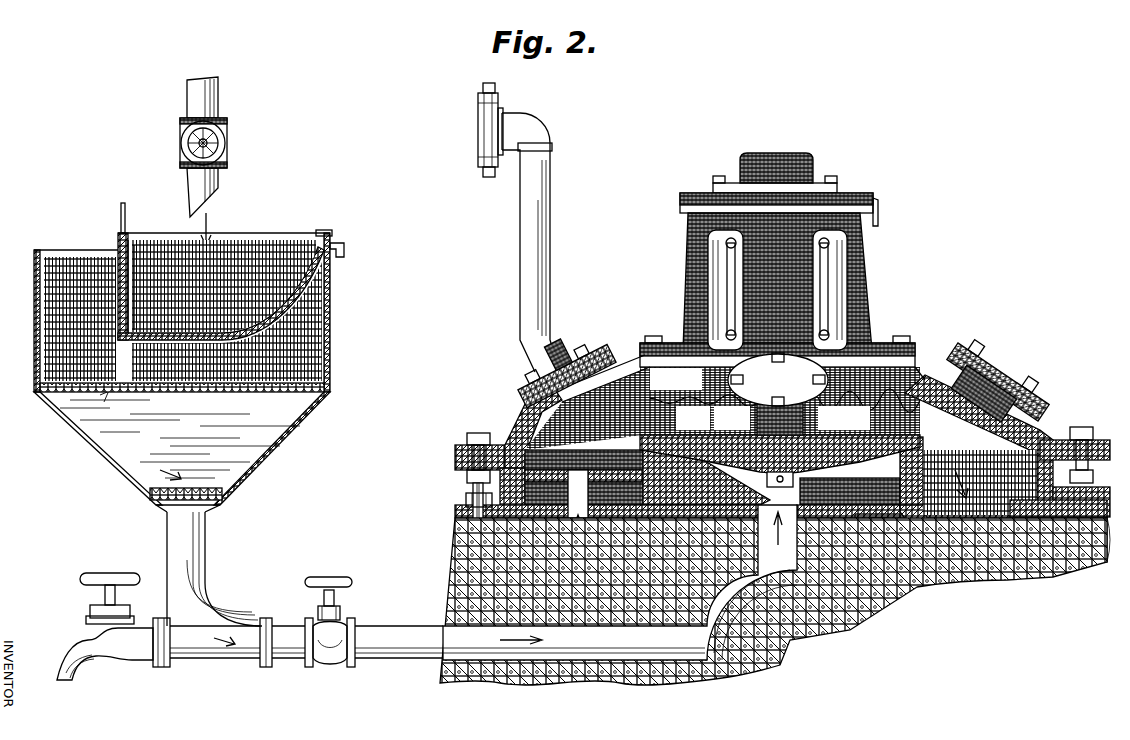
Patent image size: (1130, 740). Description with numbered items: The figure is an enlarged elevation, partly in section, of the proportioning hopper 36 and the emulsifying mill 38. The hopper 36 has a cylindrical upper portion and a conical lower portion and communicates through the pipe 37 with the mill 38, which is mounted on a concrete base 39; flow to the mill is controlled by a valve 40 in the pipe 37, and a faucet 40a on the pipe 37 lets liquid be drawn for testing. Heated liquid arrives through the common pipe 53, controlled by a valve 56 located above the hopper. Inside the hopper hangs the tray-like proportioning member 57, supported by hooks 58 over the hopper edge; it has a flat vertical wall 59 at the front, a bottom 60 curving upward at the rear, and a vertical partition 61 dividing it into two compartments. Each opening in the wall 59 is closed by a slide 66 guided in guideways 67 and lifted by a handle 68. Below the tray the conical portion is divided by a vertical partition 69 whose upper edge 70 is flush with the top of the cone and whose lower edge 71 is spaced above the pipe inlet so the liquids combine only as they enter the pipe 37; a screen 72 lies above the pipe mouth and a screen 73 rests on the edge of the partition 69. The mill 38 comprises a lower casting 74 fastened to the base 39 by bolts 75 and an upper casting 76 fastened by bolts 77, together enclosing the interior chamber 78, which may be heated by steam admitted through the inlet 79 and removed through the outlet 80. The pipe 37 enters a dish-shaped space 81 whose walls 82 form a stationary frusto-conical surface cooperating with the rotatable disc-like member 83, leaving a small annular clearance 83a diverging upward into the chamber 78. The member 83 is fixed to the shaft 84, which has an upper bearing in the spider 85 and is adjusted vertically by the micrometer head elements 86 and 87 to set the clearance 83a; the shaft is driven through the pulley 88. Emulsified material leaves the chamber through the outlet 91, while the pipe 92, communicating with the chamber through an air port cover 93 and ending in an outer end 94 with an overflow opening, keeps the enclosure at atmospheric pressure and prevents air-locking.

The proportioning hopper 36 is at (330, 300).
The pipe 37 is at (207, 585).
The emulsifying mill 38 is at (936, 373).
The concrete base 39 is at (856, 612).
The valve 40 is at (333, 656).
The faucet 40a is at (61, 648).
The common pipe 53 is at (214, 103).
The valve 56 is at (229, 144).
The proportioning member 57 is at (323, 232).
The hooks 58 is at (344, 251).
The flat vertical wall 59 is at (117, 241).
The bottom 60 is at (220, 342).
The vertical partition 61 is at (233, 238).
The slide 66 is at (129, 233).
The guideways 67 is at (135, 252).
The handle 68 is at (122, 203).
The vertical partition 69 is at (262, 422).
The upper edge 70 is at (330, 367).
The lower edge 71 is at (222, 503).
The screen 72 is at (192, 489).
The screen 73 is at (72, 392).
The lower casting 74 is at (1100, 440).
The bolts 75 is at (466, 500).
The upper casting 76 is at (1053, 440).
The bolts 77 is at (473, 433).
The interior chamber 78 is at (976, 373).
The steam inlet 79 is at (582, 490).
The outlet 80 is at (905, 500).
The dish-shaped space 81 is at (781, 636).
The walls 82 is at (936, 452).
The rotatable frusto conical disc-like member 83 is at (686, 446).
The annular clearance 83a is at (664, 434).
The shaft 84 is at (757, 417).
The spider 85 is at (870, 272).
The micrometer head element 86 is at (864, 200).
The micrometer head element 87 is at (879, 211).
The pulley 88 is at (836, 272).
The outlet 91 is at (1072, 566).
The pipe 92 is at (552, 290).
The air port cover 93 is at (578, 360).
The outer end 94 is at (478, 130).